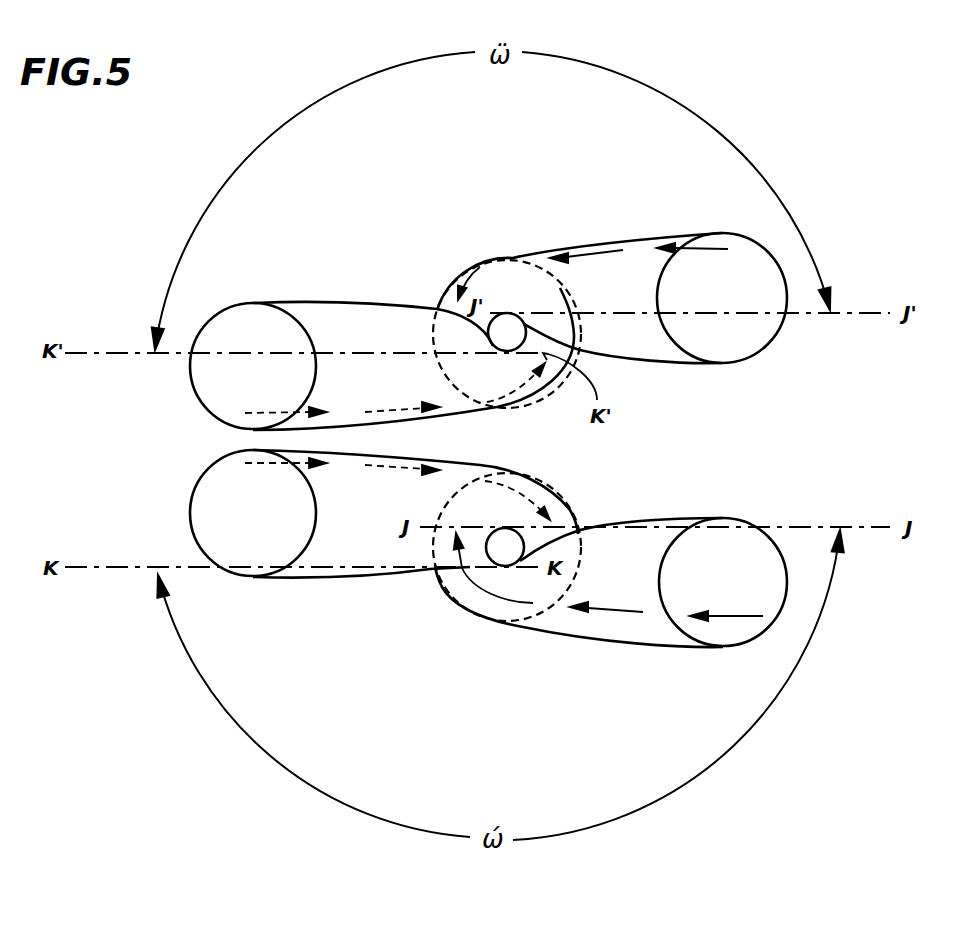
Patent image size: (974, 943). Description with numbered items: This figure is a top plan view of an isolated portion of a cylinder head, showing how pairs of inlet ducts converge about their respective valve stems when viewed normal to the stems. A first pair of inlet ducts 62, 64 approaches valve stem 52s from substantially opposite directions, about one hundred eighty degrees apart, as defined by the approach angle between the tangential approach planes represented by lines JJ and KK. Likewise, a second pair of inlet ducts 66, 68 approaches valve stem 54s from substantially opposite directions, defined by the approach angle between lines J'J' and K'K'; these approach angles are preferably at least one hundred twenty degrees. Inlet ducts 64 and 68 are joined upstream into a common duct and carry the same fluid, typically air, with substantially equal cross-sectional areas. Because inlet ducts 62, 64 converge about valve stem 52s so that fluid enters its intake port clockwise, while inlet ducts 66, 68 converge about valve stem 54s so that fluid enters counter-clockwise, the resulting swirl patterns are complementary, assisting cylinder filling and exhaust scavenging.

The inlet duct 62 is at (613, 647).
The inlet duct 64 is at (342, 578).
The inlet duct 66 is at (628, 233).
The inlet duct 68 is at (360, 302).
The valve stem 52s is at (505, 566).
The valve stem 54s is at (512, 325).